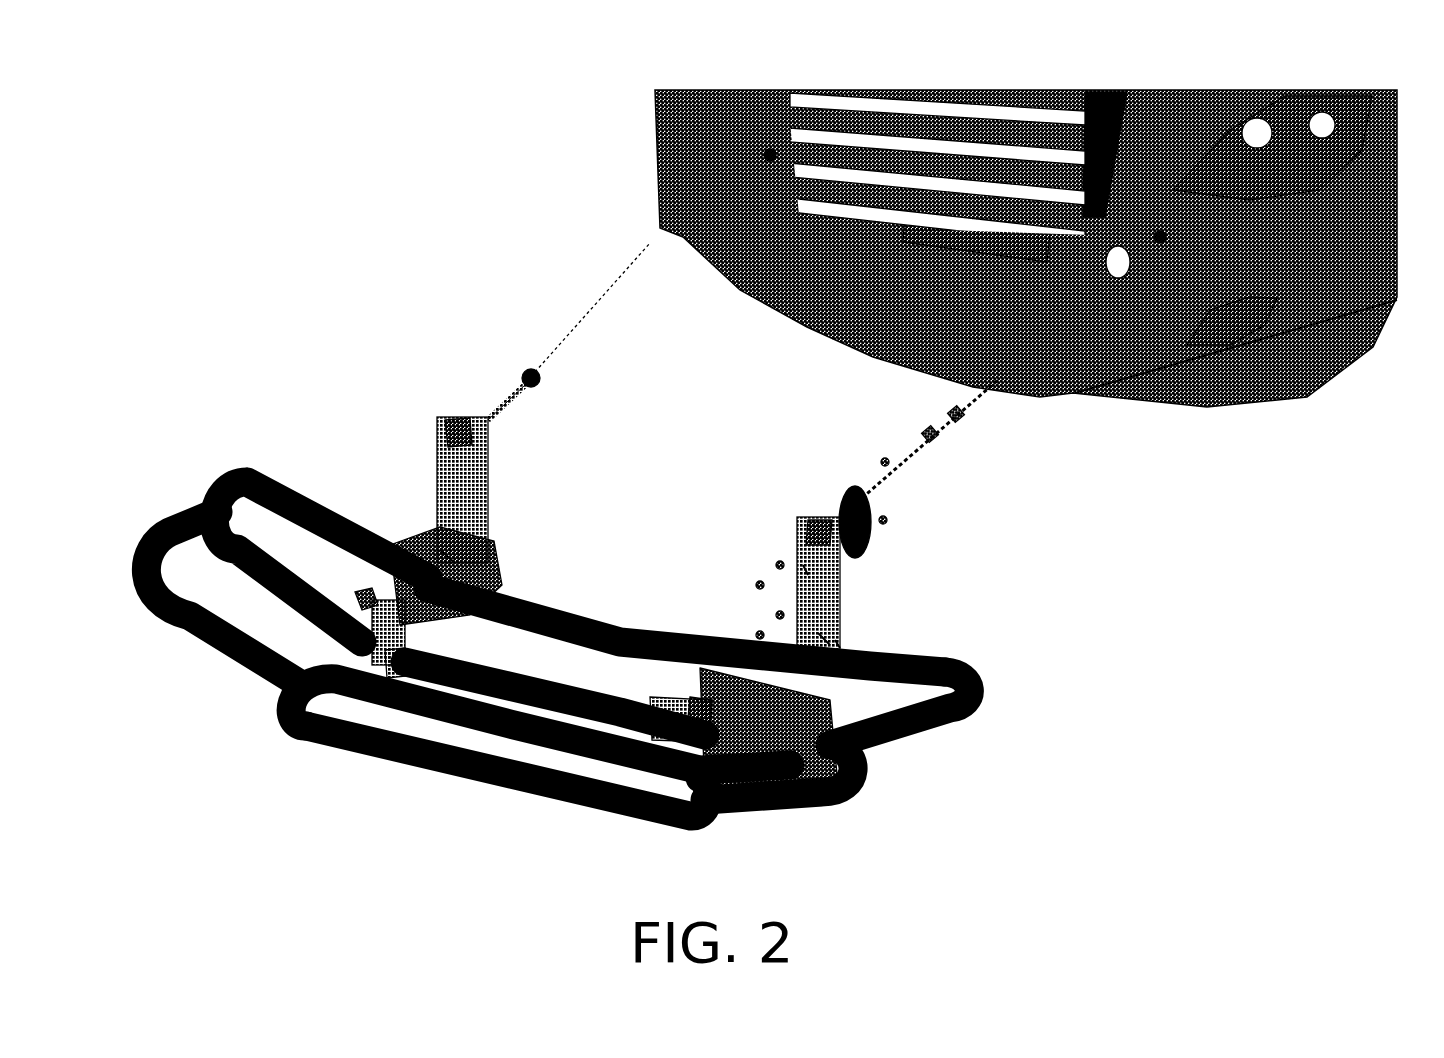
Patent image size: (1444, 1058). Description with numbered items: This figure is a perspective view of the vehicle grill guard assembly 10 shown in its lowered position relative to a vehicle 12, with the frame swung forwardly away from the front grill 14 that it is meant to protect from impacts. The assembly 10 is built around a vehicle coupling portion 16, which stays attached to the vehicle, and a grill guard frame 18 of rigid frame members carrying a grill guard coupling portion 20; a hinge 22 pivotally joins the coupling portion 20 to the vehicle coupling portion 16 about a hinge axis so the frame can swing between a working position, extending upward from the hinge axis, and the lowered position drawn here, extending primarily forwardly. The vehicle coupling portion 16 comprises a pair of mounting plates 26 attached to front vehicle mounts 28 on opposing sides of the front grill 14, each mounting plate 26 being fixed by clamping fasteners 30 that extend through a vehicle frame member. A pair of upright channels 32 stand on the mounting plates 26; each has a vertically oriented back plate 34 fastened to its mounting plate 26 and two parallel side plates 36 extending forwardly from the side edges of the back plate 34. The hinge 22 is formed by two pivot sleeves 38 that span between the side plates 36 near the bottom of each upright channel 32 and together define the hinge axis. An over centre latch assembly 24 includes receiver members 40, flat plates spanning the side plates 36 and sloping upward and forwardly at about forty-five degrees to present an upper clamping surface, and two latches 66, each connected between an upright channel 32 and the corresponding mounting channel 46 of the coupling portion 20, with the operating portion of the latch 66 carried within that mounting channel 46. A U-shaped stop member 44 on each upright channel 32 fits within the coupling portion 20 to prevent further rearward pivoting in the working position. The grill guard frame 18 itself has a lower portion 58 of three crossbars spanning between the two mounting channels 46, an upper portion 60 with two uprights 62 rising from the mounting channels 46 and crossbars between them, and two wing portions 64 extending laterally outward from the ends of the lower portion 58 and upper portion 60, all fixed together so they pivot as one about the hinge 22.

The vehicle grill guard assembly 10 is at (500, 228).
The vehicle 12 is at (652, 119).
The front grill 14 is at (960, 105).
The vehicle coupling portion 16 is at (460, 362).
The grill guard frame 18 is at (243, 447).
The grill guard coupling portion 20 is at (706, 643).
The hinge 22 is at (797, 650).
The over centre latch assembly 24 is at (653, 735).
The mounting plates 26 is at (460, 420).
The front vehicle mounts 28 is at (770, 155).
The clamping fasteners 30 is at (530, 389).
The upright channels 32 is at (494, 497).
The back plate 34 is at (818, 633).
The side plates 36 is at (803, 565).
The pivot sleeves 38 is at (440, 550).
The receiver members 40 is at (453, 462).
The stop member 44 is at (797, 603).
The mounting channels 46 is at (394, 596).
The lower portion 58 is at (588, 604).
The upper portion 60 is at (545, 800).
The uprights 62 is at (295, 727).
The wing portions 64 is at (198, 650).
The latches 66 is at (351, 590).